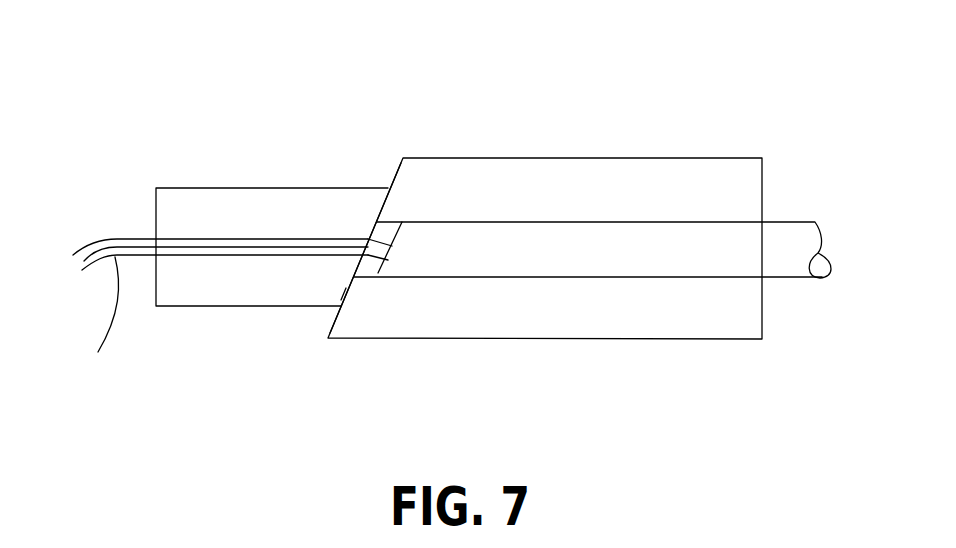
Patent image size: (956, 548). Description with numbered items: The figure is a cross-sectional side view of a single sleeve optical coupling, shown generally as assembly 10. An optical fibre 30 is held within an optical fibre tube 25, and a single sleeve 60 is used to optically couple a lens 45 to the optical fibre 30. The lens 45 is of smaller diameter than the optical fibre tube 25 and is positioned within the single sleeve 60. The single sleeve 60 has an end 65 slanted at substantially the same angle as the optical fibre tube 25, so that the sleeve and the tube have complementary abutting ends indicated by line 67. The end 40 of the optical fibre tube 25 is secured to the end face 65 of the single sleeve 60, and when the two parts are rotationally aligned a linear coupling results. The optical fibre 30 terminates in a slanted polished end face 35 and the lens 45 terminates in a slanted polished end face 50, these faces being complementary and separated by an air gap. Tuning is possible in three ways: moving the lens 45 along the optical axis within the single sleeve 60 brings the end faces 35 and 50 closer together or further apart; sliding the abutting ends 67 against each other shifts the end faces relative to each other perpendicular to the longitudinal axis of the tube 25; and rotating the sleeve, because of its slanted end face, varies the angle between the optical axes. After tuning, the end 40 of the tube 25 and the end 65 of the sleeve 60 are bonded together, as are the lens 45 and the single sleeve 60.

The connector assembly 10 is at (549, 98).
The optical fibre tube 25 is at (257, 208).
The optical fibre 30 is at (118, 238).
The end face 35 is at (365, 250).
The end of the optical fibre tube 40 is at (360, 272).
The lens 45 is at (779, 266).
The end face 50 is at (392, 242).
The single sleeve 60 is at (668, 190).
The end of the single sleeve 65 is at (397, 176).
The abutting ends 67 is at (343, 293).